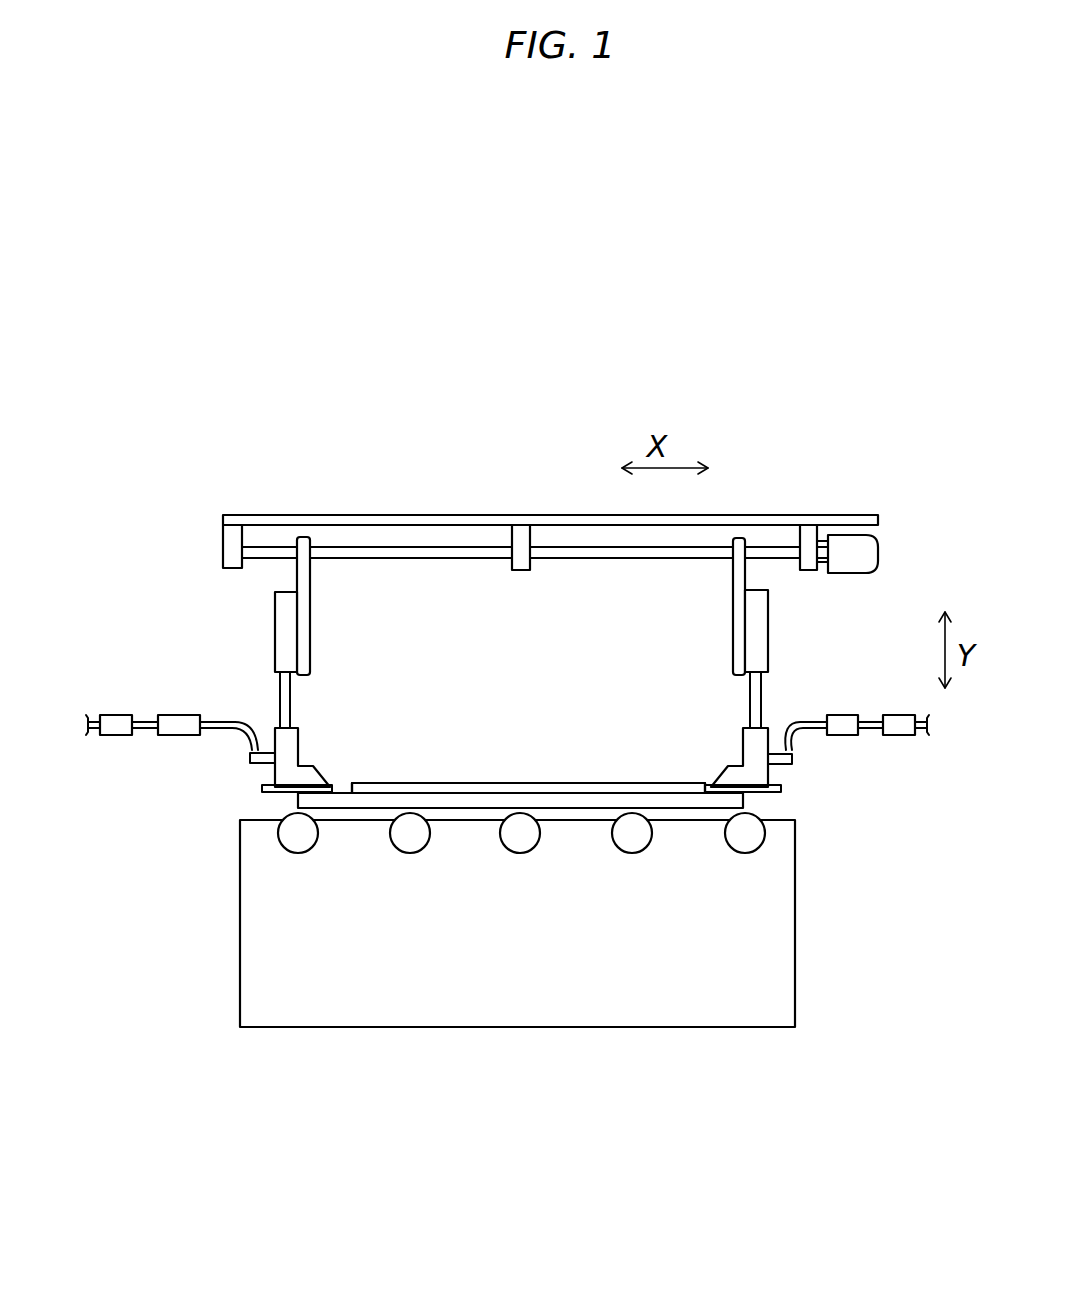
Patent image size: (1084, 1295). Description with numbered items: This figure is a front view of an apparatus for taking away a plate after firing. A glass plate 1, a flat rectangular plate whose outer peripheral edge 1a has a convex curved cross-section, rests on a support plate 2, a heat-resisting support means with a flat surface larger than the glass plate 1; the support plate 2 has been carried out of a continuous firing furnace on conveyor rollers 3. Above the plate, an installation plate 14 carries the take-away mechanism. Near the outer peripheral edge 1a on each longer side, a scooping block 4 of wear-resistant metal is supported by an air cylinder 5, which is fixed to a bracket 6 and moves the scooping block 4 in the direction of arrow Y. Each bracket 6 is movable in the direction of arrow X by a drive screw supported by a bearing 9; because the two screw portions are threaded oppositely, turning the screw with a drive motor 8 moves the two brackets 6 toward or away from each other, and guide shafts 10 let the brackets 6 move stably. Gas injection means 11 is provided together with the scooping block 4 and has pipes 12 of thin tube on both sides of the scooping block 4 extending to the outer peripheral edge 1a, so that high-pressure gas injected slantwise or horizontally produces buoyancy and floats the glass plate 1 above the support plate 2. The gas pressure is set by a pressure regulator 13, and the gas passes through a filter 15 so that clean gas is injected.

The glass plate 1 is at (556, 796).
The outer peripheral edge 1a is at (348, 795).
The support plate 2 is at (470, 802).
The conveyor rollers 3 is at (750, 842).
The scooping block 4 is at (285, 735).
The air cylinder 5 is at (285, 625).
The bracket 6 is at (300, 580).
The drive motor 8 is at (850, 548).
The bearing 9 is at (232, 540).
The guide shafts 10 is at (388, 555).
The gas injection means 11 is at (258, 758).
The pipes 12 is at (270, 784).
The pressure regulator 13 is at (180, 722).
The installation plate 14 is at (878, 518).
The filter 15 is at (112, 736).